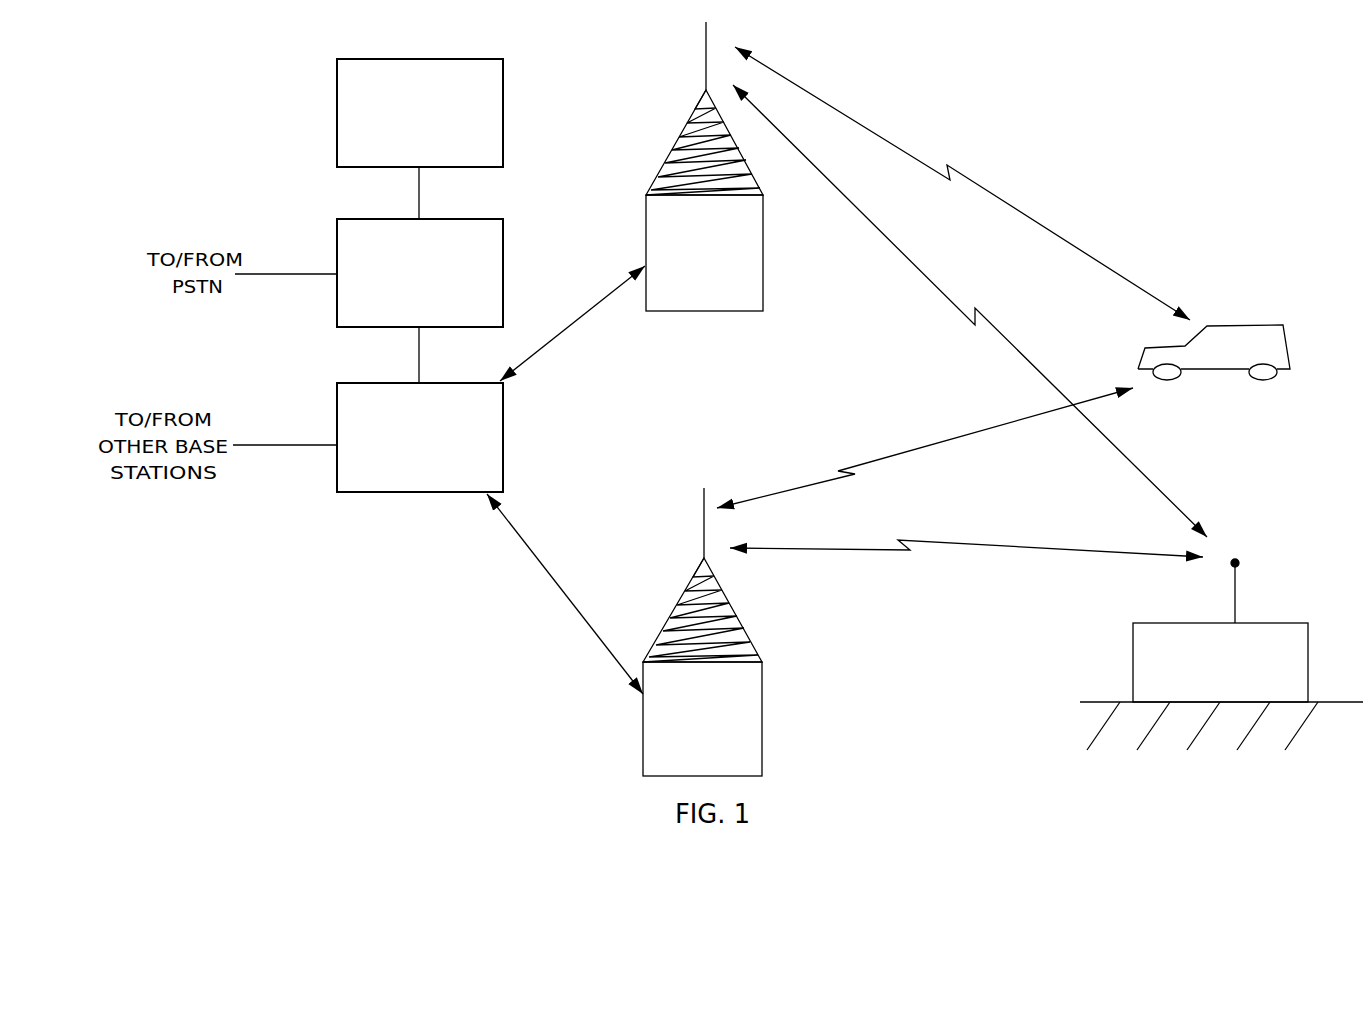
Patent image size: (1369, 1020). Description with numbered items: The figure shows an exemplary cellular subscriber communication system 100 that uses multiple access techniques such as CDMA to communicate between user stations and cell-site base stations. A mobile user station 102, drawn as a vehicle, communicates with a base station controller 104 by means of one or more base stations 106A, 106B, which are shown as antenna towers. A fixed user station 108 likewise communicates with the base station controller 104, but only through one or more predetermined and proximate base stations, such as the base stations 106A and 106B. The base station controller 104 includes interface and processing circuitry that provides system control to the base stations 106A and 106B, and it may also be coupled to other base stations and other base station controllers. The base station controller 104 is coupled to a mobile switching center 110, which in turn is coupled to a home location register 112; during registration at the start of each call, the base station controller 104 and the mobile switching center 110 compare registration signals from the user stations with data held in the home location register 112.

The cellular subscriber communication system 100 is at (993, 661).
The mobile user station 102 is at (1283, 323).
The base station controller 104 is at (338, 383).
The base station 106A is at (682, 133).
The base station 106B is at (737, 617).
The fixed user station 108 is at (1298, 622).
The mobile switching center 110 is at (490, 219).
The home location register 112 is at (490, 59).